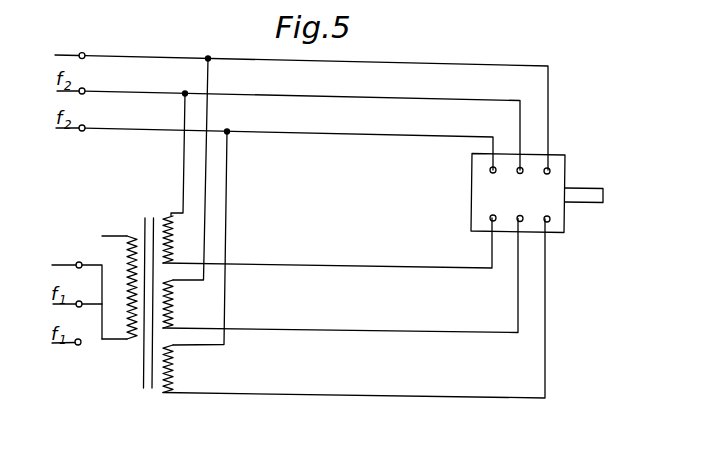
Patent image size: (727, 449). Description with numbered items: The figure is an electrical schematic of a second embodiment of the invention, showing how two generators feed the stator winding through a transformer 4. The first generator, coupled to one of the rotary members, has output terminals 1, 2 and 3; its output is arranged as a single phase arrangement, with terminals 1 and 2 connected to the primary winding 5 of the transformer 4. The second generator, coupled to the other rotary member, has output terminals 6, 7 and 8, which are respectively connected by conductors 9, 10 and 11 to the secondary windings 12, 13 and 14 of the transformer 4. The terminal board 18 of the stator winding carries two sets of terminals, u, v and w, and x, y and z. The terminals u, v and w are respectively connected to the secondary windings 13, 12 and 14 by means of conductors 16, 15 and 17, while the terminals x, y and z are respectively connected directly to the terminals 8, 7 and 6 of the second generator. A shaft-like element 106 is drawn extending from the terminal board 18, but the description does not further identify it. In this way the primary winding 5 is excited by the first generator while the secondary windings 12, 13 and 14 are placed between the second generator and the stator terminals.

The output terminal 1 is at (79, 262).
The output terminal 2 is at (79, 301).
The output terminal 3 is at (79, 339).
The transformer 4 is at (143, 373).
The primary winding 5 is at (127, 260).
The output terminal 6 is at (83, 52).
The output terminal 7 is at (84, 88).
The output terminal 8 is at (84, 125).
The conductor 9 is at (205, 172).
The conductor 10 is at (183, 200).
The conductor 11 is at (227, 216).
The secondary winding 12 is at (173, 303).
The secondary winding 13 is at (173, 240).
The secondary winding 14 is at (173, 367).
The conductor 15 is at (302, 328).
The conductor 16 is at (303, 264).
The conductor 17 is at (298, 395).
The terminal board 18 is at (566, 167).
The motor shaft 106 is at (588, 197).